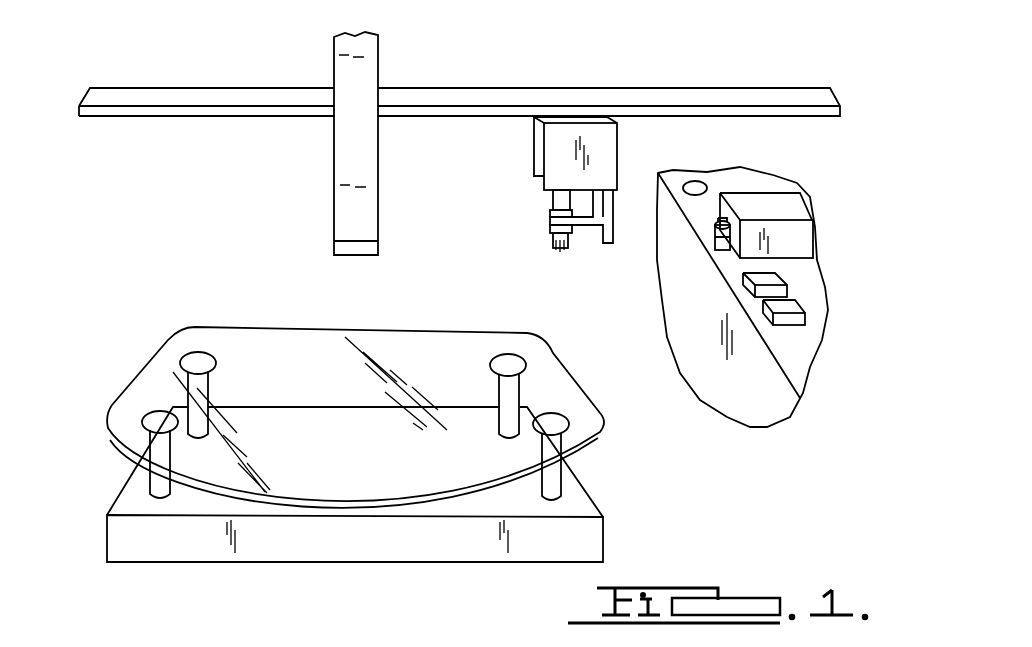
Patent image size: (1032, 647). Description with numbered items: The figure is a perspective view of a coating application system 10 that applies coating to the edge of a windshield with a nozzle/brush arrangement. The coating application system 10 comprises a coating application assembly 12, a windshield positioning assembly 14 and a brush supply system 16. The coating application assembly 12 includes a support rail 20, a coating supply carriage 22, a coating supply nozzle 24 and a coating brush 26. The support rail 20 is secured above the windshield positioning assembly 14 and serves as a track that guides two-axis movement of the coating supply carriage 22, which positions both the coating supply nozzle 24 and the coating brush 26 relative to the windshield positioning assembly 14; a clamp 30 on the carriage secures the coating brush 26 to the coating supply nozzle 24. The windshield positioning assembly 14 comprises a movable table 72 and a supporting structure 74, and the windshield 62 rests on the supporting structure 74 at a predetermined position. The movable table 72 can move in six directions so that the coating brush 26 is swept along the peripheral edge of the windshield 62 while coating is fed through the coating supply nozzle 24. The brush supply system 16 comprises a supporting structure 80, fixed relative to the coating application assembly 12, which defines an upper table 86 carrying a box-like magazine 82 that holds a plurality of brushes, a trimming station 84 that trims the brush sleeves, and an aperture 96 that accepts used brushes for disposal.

The coating application system 10 is at (798, 63).
The coating application assembly 12 is at (514, 218).
The windshield positioning assembly 14 is at (217, 579).
The brush supply system 16 is at (651, 332).
The support rail 20 is at (363, 70).
The coating supply carriage 22 is at (595, 150).
The coating supply nozzle 24 is at (550, 212).
The coating brush 26 is at (550, 242).
The clamp 30 is at (586, 233).
The windshield 62 is at (588, 425).
The movable table 72 is at (590, 538).
The supporting structure 74 is at (550, 485).
The supporting structure 80 is at (797, 360).
The magazine 82 is at (788, 203).
The trimming station 84 is at (800, 288).
The upper table 86 is at (810, 330).
The aperture 96 is at (697, 187).